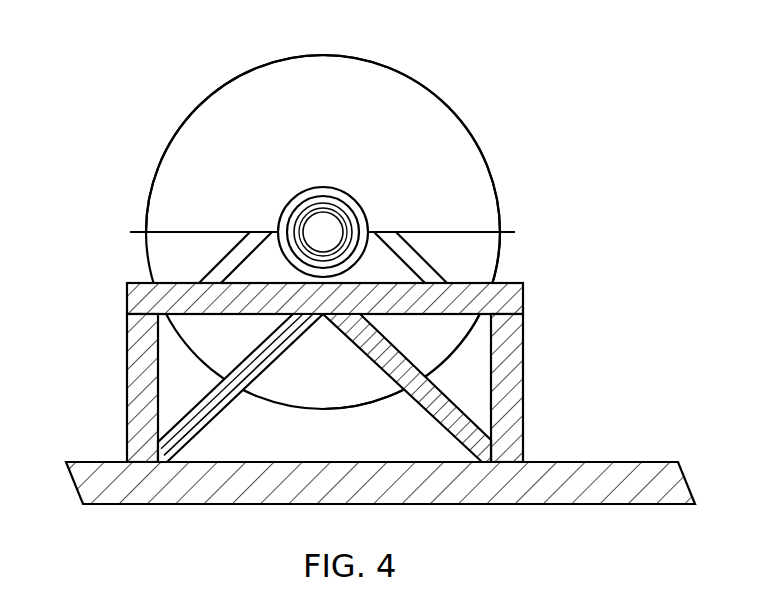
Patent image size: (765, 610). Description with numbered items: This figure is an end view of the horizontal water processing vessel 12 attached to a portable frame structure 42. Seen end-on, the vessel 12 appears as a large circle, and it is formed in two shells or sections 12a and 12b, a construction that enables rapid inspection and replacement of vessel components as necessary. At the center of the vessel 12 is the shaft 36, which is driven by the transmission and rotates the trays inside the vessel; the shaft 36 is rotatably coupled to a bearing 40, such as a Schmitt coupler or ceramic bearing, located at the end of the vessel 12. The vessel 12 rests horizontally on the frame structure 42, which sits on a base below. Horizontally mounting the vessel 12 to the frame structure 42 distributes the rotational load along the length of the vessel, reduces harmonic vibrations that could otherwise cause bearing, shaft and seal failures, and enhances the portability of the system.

The water processing vessel 12 is at (150, 157).
The vessel shell section 12a is at (470, 256).
The vessel shell section 12b is at (323, 131).
The shaft 36 is at (413, 175).
The bearing 40 is at (325, 229).
The frame structure 42 is at (376, 393).